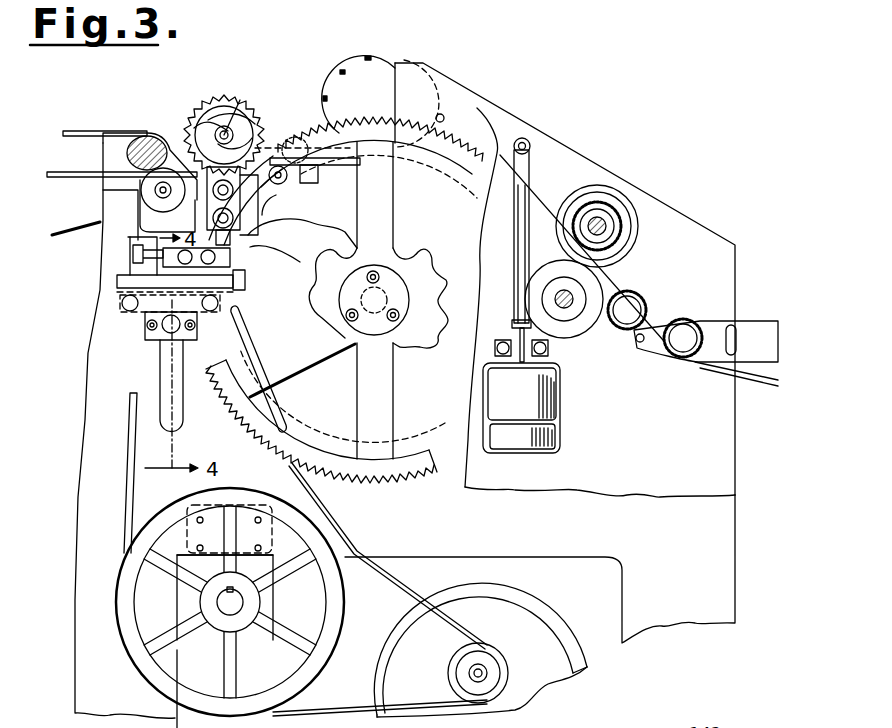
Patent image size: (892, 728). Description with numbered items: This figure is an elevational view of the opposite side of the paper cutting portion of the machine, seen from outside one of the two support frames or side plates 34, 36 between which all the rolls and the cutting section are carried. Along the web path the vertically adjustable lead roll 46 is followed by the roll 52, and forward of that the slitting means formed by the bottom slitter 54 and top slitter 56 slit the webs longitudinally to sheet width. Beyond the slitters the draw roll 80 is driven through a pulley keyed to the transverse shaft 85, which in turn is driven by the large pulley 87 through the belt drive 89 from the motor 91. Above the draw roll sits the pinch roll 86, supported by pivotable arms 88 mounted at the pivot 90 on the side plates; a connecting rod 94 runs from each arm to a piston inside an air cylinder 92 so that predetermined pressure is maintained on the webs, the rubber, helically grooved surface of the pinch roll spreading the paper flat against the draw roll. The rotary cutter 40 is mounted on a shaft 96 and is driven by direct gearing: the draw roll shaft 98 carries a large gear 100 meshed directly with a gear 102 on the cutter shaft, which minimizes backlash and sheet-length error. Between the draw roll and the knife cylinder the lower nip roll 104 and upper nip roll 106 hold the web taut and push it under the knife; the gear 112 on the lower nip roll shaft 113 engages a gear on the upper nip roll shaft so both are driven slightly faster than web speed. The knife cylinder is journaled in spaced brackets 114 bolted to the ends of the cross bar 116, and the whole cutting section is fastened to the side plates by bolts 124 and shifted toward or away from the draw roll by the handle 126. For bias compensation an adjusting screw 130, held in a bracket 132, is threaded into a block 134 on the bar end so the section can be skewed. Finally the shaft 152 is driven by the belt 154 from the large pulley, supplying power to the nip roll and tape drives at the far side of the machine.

The support frame 34 is at (692, 432).
The support frame 36 is at (686, 578).
The rotary cutter 40 is at (176, 126).
The lead roll 46 is at (690, 319).
The roll 52 is at (624, 331).
The bottom slitter 54 is at (600, 331).
The top slitter 56 is at (641, 231).
The draw roll 80 is at (437, 468).
The shaft 85 is at (247, 603).
The pinch roll 86 is at (375, 58).
The large pulley 87 is at (378, 613).
The arms 88 is at (511, 141).
The belt drive 89 is at (452, 628).
The pivot 90 is at (443, 114).
The motor 91 is at (568, 622).
The air cylinder 92 is at (561, 411).
The connecting rod 94 is at (531, 190).
The rotary cutter shaft 96 is at (240, 100).
The draw roll shaft 98 is at (396, 278).
The large gear 100 is at (382, 118).
The gear 102 is at (256, 112).
The lower nip roll 104 is at (232, 205).
The upper nip roll 106 is at (288, 137).
The gear 112 is at (289, 180).
The lower nip roll shaft 113 is at (270, 204).
The bracket 114 is at (188, 144).
The cross bar 116 is at (257, 249).
The bolt 124 is at (128, 312).
The handle 126 is at (184, 427).
The adjusting screw 130 is at (134, 262).
The bracket 132 is at (137, 246).
The block 134 is at (246, 285).
The shaft 152 is at (103, 195).
The belt 154 is at (130, 478).